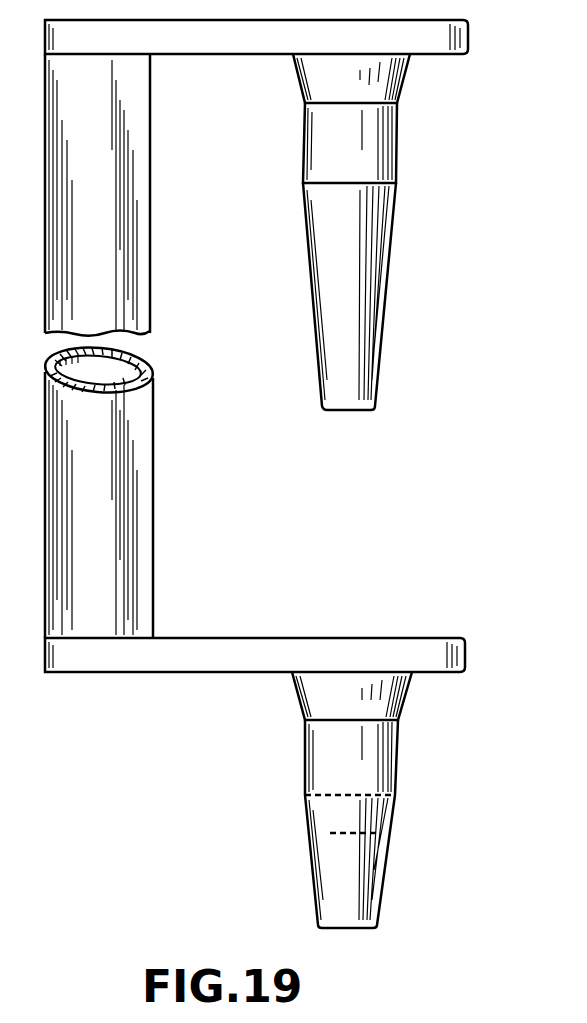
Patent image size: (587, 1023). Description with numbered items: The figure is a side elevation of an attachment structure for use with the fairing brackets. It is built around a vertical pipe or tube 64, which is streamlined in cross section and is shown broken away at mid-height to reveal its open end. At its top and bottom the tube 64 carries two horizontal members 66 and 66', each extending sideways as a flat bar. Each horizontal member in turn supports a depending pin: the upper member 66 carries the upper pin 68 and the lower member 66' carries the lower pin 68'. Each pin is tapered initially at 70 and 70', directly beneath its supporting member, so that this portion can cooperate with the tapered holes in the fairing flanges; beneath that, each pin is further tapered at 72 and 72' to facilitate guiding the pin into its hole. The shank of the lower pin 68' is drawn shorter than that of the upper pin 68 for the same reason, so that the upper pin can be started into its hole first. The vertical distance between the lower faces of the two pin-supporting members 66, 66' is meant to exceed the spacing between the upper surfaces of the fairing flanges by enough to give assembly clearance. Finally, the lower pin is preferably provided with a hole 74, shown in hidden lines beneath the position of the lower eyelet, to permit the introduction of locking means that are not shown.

The vertical pipe or tube 64 is at (153, 491).
The upper horizontal member 66 is at (282, 36).
The lower horizontal member 66' is at (267, 641).
The upper pin 68 is at (388, 232).
The lower pin 68' is at (367, 800).
The initial taper of upper pin 70 is at (372, 80).
The initial taper of lower pin 70' is at (376, 696).
The further tapered portion of upper pin 72 is at (371, 296).
The further tapered portion of lower pin 72' is at (375, 861).
The hole 74 is at (330, 833).